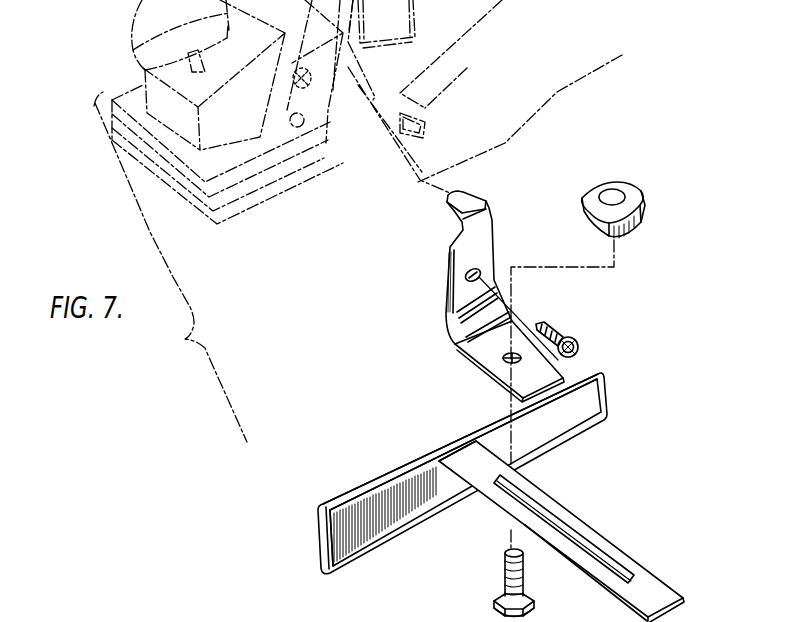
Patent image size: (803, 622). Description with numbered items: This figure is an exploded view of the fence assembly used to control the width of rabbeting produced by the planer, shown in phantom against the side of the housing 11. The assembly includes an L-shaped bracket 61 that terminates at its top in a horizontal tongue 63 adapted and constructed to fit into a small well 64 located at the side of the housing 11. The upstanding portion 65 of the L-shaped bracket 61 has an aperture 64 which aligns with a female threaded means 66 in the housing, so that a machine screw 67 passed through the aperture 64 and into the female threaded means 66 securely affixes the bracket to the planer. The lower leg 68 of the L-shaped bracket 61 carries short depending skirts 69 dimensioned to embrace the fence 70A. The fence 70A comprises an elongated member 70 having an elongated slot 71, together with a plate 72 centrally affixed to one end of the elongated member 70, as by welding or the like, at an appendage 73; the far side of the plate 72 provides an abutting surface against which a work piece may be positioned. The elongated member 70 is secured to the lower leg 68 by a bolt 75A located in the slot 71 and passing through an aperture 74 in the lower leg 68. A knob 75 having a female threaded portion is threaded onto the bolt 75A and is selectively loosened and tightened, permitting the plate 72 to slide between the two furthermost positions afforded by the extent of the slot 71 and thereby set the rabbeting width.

The housing 11 is at (352, 86).
The L-shaped bracket 61 is at (486, 209).
The horizontal tongue 63 is at (455, 193).
The aperture 64 is at (306, 82).
The upstanding portion 65 is at (462, 297).
The female threaded means 66 is at (290, 121).
The machine screw 67 is at (572, 326).
The lower leg 68 is at (473, 362).
The depending skirts 69 is at (505, 383).
The elongated member 70 is at (611, 541).
The fence 70A is at (551, 498).
The elongated slot 71 is at (627, 571).
The plate 72 is at (561, 439).
The appendage 73 is at (448, 490).
The aperture 74 is at (513, 350).
The knob 75 is at (623, 210).
The bolt 75A is at (530, 576).